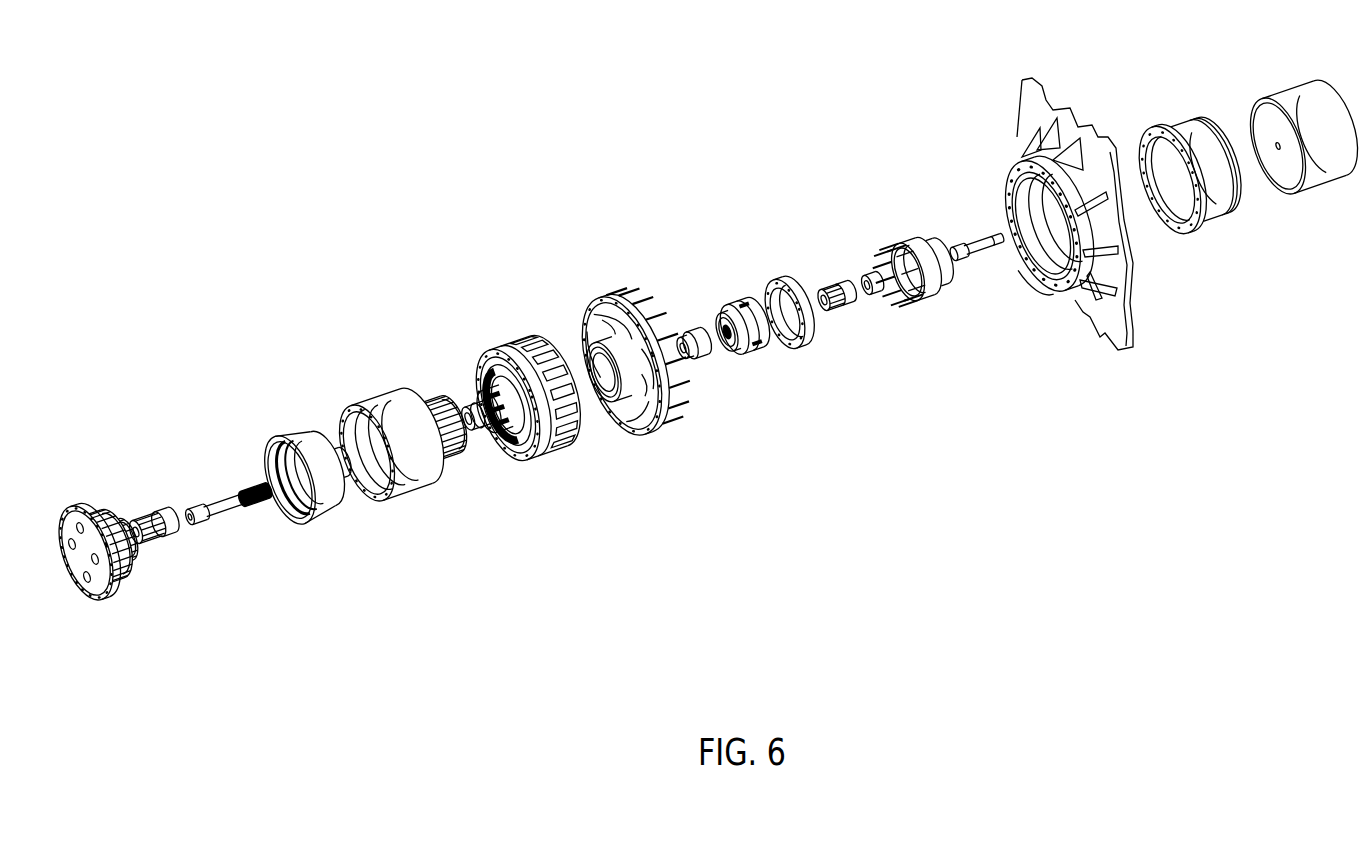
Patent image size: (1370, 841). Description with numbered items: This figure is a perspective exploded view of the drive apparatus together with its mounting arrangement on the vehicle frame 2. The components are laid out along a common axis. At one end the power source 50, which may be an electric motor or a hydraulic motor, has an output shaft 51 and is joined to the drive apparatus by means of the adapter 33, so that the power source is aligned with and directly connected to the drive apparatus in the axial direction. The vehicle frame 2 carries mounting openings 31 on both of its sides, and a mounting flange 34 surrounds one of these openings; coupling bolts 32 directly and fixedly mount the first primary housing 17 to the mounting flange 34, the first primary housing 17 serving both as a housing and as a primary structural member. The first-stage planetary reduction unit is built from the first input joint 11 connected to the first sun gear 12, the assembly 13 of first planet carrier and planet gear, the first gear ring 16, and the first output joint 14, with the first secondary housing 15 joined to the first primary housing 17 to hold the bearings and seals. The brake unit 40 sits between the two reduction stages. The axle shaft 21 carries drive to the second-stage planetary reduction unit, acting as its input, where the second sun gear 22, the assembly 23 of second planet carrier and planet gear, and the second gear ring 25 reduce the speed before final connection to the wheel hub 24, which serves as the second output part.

The vehicle frame 2 is at (1043, 227).
The first input joint 11 is at (866, 276).
The first sun gear 12 is at (830, 290).
The assembly of first planet carrier and planet gear 13 is at (735, 306).
The first output joint 14 is at (690, 327).
The first secondary housing 15 is at (910, 234).
The first gear ring 16 is at (780, 283).
The first primary housing 17 is at (607, 300).
The axle shaft 21 is at (224, 494).
The second sun gear 22 is at (156, 520).
The assembly of second planet carrier and planet gear 23 is at (82, 502).
The wheel hub 24 is at (383, 398).
The second gear ring 25 is at (288, 440).
The mounting opening 31 is at (1066, 238).
The coupling bolts 32 is at (587, 314).
The adapter 33 is at (1182, 128).
The mounting flange 34 is at (1085, 270).
The brake unit 40 is at (496, 332).
The power source 50 is at (1283, 75).
The output shaft 51 is at (973, 243).